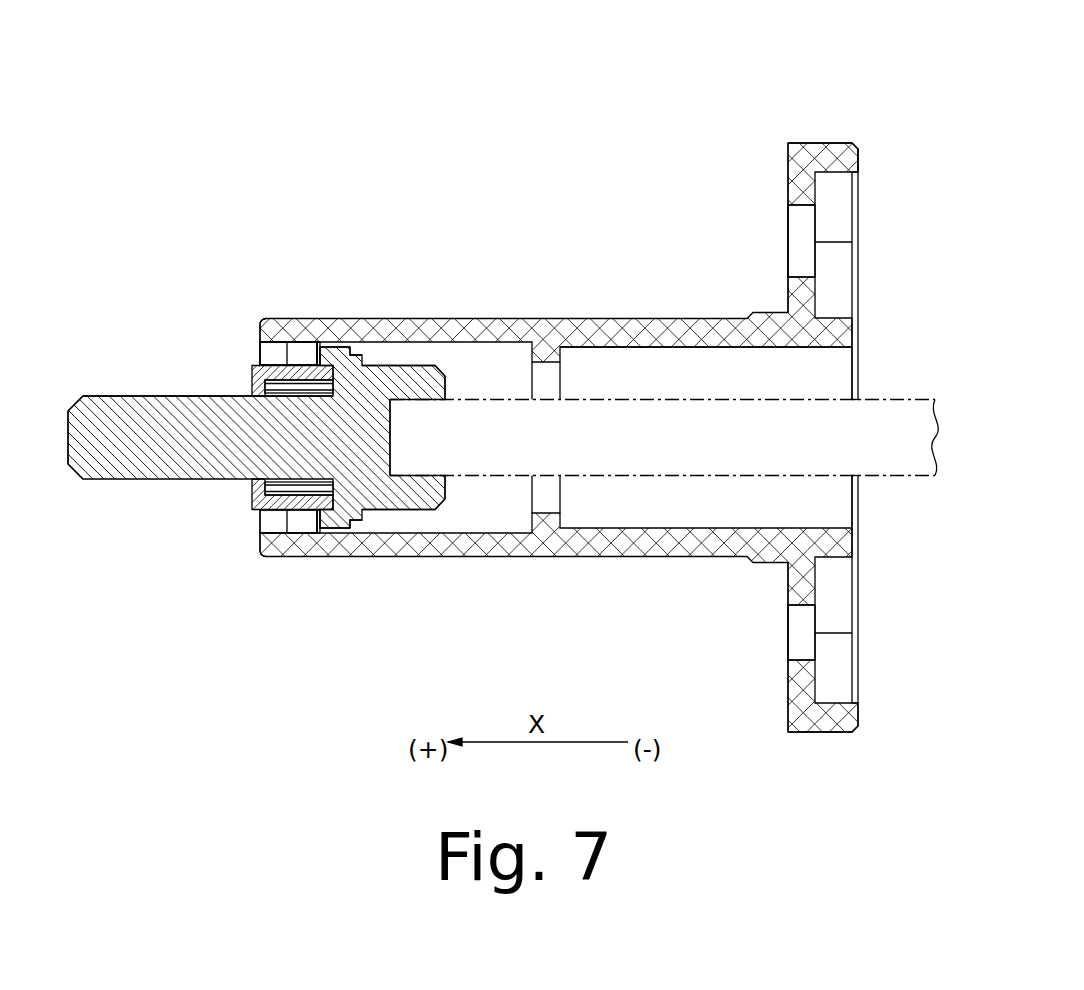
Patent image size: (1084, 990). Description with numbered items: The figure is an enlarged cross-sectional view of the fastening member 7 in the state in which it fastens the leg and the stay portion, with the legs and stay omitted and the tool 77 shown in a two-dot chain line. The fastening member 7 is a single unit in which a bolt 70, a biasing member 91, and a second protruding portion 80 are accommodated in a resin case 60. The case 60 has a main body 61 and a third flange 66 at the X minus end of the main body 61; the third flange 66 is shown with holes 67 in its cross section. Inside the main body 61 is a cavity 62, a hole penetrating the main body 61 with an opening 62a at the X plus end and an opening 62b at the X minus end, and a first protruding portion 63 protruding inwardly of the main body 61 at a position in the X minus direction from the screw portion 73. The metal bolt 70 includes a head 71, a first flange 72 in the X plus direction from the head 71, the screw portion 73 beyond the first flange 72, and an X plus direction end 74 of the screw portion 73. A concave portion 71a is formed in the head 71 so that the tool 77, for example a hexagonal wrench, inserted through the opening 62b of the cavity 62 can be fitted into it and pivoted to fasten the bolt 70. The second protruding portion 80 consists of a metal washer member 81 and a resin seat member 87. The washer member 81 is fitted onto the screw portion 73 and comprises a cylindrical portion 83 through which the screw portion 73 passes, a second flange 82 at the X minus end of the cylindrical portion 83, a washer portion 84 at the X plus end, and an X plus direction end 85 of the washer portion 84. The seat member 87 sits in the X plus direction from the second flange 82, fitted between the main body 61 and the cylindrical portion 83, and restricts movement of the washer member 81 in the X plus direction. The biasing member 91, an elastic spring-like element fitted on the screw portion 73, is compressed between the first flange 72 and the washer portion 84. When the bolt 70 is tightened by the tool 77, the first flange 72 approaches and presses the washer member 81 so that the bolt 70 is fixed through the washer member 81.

The fastening member 7 is at (888, 87).
The case 60 is at (630, 317).
The main body 61 is at (687, 317).
The cavity 62 is at (809, 389).
The opening 62a is at (250, 524).
The opening 62b is at (868, 497).
The first protruding portion 63 is at (560, 362).
The third flange 66 is at (838, 143).
The mounting hole 67 is at (793, 238).
The bolt 70 is at (165, 410).
The head 71 is at (447, 378).
The concave portion 71a is at (452, 478).
The first flange 72 is at (365, 360).
The screw portion 73 is at (120, 410).
The X(+) direction end 74 is at (63, 430).
The tool 77 is at (903, 400).
The second protruding portion 80 is at (288, 437).
The washer member 81 is at (353, 240).
The second flange 82 is at (322, 353).
The cylindrical portion 83 is at (293, 342).
The washer portion 84 is at (252, 365).
The X(+) direction end 85 is at (242, 380).
The seat member 87 is at (312, 525).
The biasing member 91 is at (288, 495).